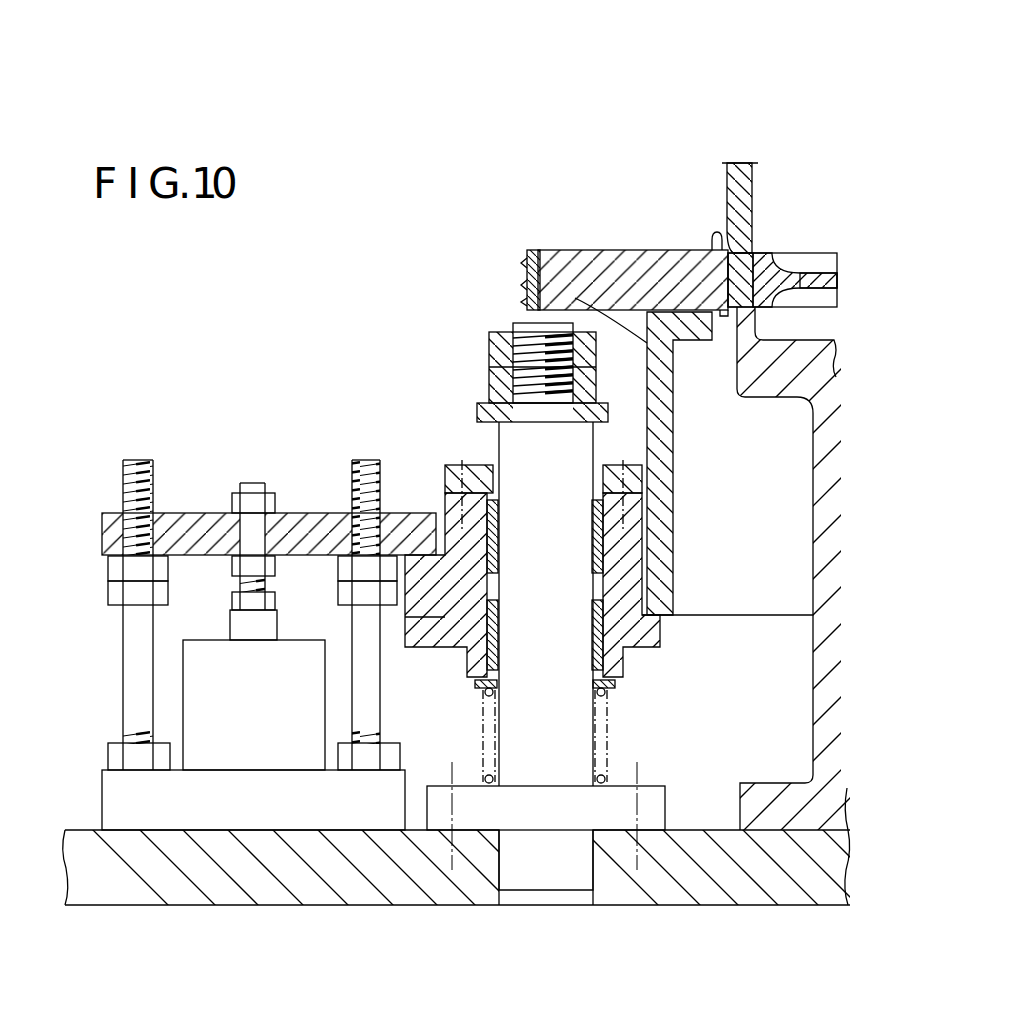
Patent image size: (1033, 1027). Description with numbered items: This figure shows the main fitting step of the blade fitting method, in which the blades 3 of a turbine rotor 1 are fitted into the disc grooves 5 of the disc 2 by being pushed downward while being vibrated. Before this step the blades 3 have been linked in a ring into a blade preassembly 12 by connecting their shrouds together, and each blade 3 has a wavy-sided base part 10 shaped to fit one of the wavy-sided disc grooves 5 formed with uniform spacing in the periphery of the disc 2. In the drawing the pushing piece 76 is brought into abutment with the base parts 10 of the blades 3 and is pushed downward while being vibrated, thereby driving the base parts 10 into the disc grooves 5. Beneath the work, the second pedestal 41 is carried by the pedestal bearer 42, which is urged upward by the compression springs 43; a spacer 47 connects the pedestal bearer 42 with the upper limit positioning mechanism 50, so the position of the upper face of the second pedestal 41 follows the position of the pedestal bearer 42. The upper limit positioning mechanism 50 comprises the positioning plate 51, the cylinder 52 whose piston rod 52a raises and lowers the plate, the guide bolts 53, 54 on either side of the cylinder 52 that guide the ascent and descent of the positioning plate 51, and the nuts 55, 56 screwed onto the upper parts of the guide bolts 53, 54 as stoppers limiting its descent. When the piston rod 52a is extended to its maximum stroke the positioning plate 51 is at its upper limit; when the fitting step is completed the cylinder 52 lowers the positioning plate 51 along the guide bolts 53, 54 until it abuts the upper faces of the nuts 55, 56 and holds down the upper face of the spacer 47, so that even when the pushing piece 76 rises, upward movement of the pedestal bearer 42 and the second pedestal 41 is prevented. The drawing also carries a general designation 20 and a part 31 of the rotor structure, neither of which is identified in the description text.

The turbine rotor 1 is at (802, 252).
The disc 2 is at (833, 250).
The turbine blade 3 is at (640, 245).
The disc groove 5 is at (712, 250).
The base part 10 is at (770, 252).
The blade preassembly 12 is at (565, 215).
The fixture 20 is at (367, 170).
The wheel wall 31 is at (818, 345).
The second pedestal 41 is at (533, 272).
The pedestal bearer 42 is at (640, 528).
The compression spring 43 is at (612, 742).
The spacer 47 is at (437, 513).
The upper limit positioning mechanism 50 is at (239, 535).
The positioning plate 51 is at (308, 513).
The cylinder 52 is at (223, 685).
The piston rod 52a is at (247, 533).
The guide bolt 53 is at (357, 459).
The guide bolt 54 is at (132, 462).
The nut 55 is at (340, 572).
The nut 56 is at (112, 592).
The pushing piece 76 is at (718, 240).